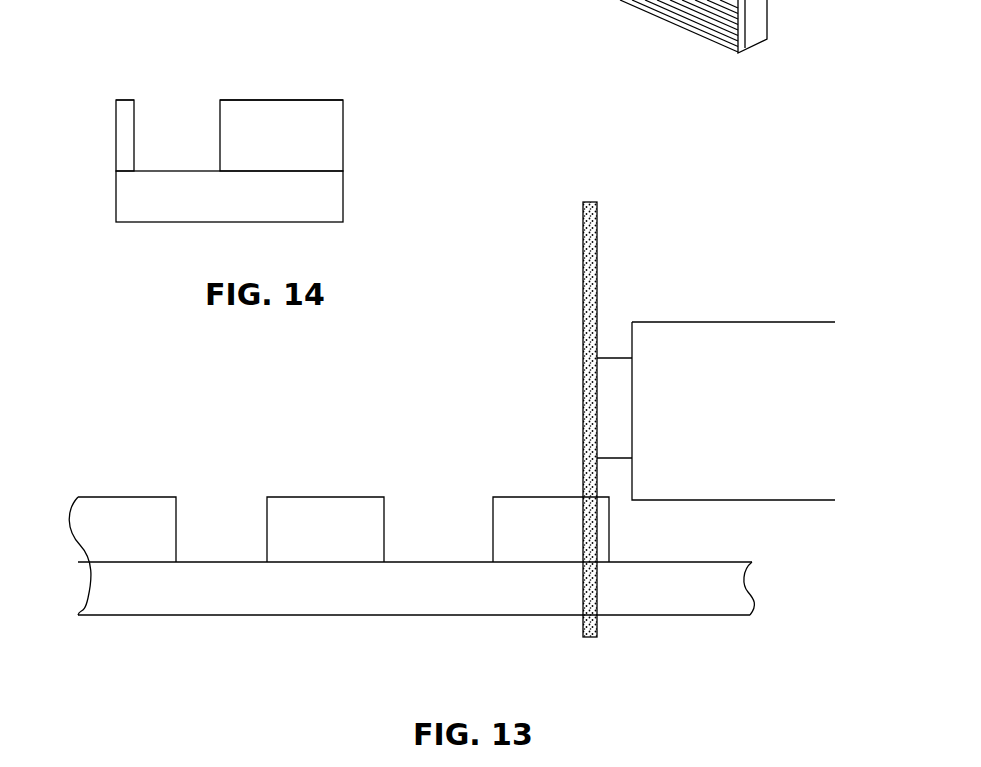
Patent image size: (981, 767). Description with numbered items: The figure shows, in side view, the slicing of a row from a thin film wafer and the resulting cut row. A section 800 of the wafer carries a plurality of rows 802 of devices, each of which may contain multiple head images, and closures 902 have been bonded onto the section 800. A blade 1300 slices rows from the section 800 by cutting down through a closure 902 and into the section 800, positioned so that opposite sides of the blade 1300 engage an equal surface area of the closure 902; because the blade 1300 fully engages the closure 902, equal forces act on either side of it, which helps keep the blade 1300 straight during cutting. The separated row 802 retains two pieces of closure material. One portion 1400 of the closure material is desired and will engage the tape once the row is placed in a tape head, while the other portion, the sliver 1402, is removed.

In FIG. 13, the section 800 is at (300, 617).
In FIG. 14, the row 802 is at (148, 223).
In FIG. 14, the closure 902 is at (125, 100).
In FIG. 13, the closure 902 is at (349, 497).
In FIG. 13, the blade 1300 is at (597, 258).
In FIG. 14, the portion of the closure material 1400 is at (343, 115).
In FIG. 14, the sliver 1402 is at (116, 135).